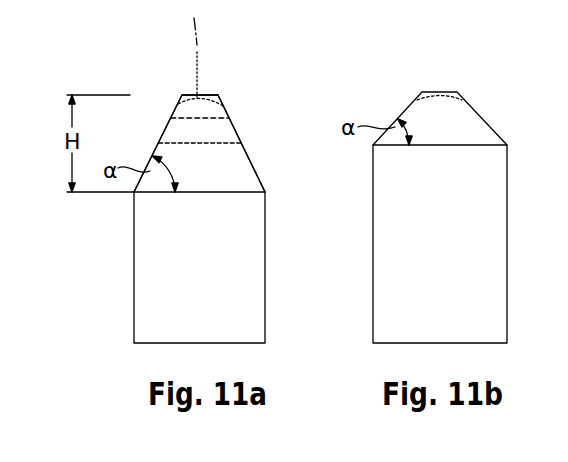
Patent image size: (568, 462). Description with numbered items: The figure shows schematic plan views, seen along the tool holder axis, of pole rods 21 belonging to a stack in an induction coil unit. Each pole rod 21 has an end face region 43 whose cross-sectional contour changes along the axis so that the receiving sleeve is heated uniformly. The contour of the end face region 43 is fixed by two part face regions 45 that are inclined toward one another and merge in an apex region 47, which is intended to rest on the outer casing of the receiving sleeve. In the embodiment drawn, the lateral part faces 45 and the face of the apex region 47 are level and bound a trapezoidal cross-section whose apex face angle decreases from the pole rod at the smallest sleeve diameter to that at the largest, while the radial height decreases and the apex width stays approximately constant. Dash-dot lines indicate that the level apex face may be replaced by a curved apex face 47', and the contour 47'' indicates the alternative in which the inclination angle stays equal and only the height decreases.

In FIG. 11A, the pole rod 21 is at (153, 293).
In FIG. 11B, the pole rod 21 is at (398, 293).
In FIG. 11A, the end face region 43 is at (219, 76).
In FIG. 11B, the end face region 43 is at (452, 82).
In FIG. 11A, the part face region 45 is at (167, 127).
In FIG. 11A, the apex region 47 is at (181, 63).
In FIG. 11A, the curved apex face 47' is at (179, 48).
In FIG. 11A, the contour of lowermost pole rod 47'' is at (240, 160).